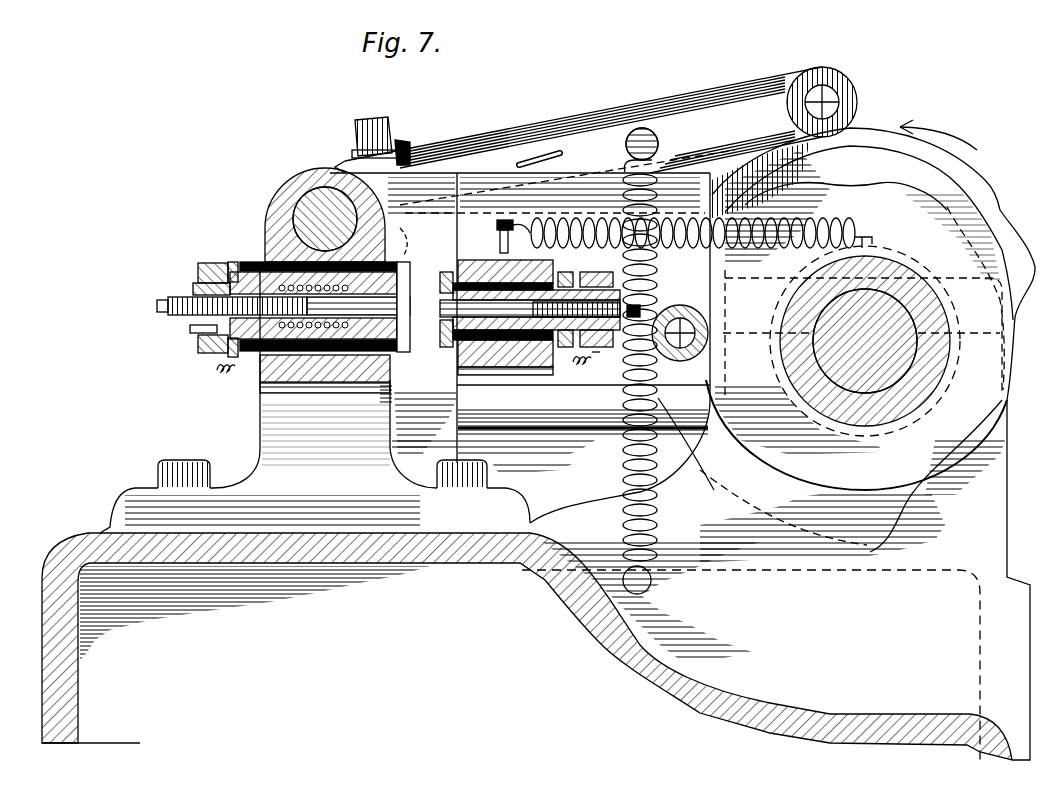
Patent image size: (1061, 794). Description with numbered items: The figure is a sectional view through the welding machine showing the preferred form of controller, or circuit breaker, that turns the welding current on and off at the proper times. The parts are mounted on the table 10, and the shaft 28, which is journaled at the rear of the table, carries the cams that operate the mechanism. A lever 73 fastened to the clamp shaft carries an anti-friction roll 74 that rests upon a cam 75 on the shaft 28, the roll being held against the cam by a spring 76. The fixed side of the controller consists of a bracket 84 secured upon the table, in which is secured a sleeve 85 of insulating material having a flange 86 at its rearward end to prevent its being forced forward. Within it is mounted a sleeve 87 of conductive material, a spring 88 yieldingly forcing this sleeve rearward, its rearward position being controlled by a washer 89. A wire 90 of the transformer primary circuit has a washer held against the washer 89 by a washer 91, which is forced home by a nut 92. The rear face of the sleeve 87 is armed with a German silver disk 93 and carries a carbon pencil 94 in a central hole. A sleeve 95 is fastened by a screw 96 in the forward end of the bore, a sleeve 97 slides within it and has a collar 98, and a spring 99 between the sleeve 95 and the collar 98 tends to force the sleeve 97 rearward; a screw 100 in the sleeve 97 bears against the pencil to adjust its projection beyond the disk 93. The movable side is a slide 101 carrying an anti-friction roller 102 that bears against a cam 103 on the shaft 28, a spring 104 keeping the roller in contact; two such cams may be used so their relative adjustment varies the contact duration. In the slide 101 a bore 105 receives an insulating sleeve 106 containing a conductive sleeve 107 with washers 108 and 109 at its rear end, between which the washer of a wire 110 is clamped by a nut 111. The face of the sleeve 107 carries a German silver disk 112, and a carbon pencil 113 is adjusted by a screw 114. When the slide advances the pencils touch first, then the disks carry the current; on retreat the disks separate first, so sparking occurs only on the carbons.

The table 10 is at (73, 548).
The shaft 28 is at (895, 376).
The lever 73 is at (603, 115).
The anti-friction roll 74 is at (858, 100).
The cam 75 is at (868, 136).
The spring 76 is at (620, 513).
The bracket 84 is at (262, 425).
The sleeve of insulating material 85 is at (258, 262).
The flange 86 is at (398, 360).
The sleeve of conductive material 87 is at (440, 338).
The spring 88 is at (297, 385).
The washer 89 is at (240, 262).
The wire of the primary circuit 90 is at (217, 368).
The washer 91 is at (228, 262).
The nut 92 is at (200, 350).
The disk 93 is at (405, 272).
The carbon pencil 94 is at (407, 295).
The sleeve 95 is at (195, 290).
The screw 96 is at (190, 328).
The sleeve 97 is at (168, 304).
The collar 98 is at (402, 250).
The spring 99 is at (343, 385).
The screw 100 is at (157, 308).
The slide 101 is at (445, 375).
The anti-friction roller 102 is at (665, 368).
The cam 103 is at (1003, 222).
The spring 104 is at (557, 218).
The bore 105 is at (543, 368).
The sleeve of insulating material 106 is at (472, 272).
The sleeve of conductive material 107 is at (458, 350).
The washer 108 is at (569, 298).
The washer 109 is at (600, 298).
The wire of the primary circuit 110 is at (582, 362).
The nut 111 is at (609, 358).
The disk 112 is at (448, 275).
The carbon pencil 113 is at (478, 375).
The screw 114 is at (636, 310).